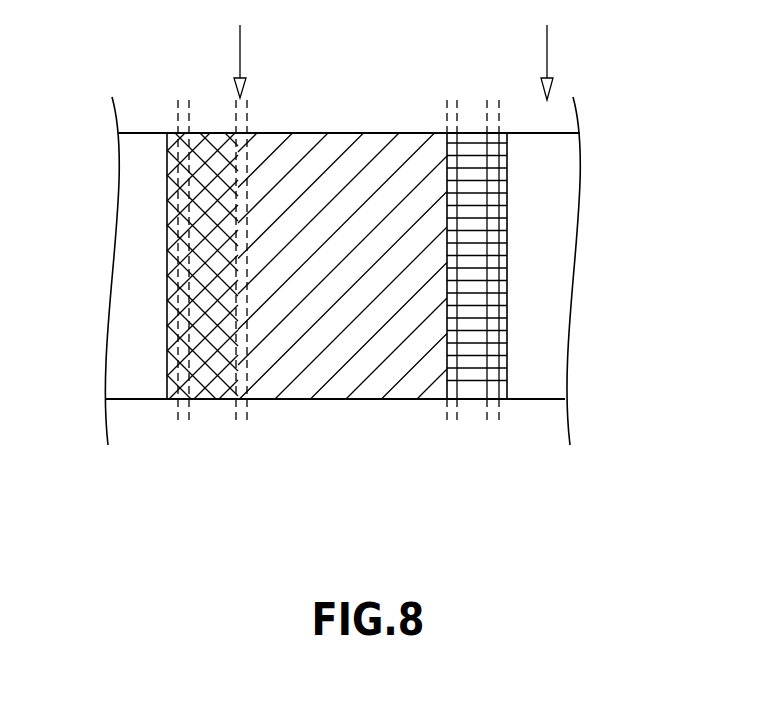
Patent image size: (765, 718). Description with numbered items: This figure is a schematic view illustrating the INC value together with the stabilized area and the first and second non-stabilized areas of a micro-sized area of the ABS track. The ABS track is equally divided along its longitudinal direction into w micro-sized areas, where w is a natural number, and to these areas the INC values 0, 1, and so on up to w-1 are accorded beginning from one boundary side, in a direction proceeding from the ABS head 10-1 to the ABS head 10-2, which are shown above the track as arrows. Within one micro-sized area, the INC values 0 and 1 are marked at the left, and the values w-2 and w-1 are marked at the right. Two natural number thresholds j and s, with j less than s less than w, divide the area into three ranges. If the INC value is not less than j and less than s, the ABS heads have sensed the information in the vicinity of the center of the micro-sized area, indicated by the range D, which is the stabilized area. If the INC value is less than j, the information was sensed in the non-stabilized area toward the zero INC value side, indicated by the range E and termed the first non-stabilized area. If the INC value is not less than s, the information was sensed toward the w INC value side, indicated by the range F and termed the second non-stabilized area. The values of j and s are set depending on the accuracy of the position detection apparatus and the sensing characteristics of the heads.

The ABS head 10-1 is at (240, 43).
The ABS head 10-2 is at (547, 43).
The first non-stabilized area E is at (208, 142).
The stabilized area D is at (338, 143).
The second non-stabilized area F is at (475, 143).
The INC value 0 is at (177, 388).
The INC value 1 is at (188, 390).
The INC value threshold j is at (243, 388).
The INC value threshold s is at (453, 388).
The INC value w-1 is at (500, 388).
The INC value w-2 is at (495, 388).